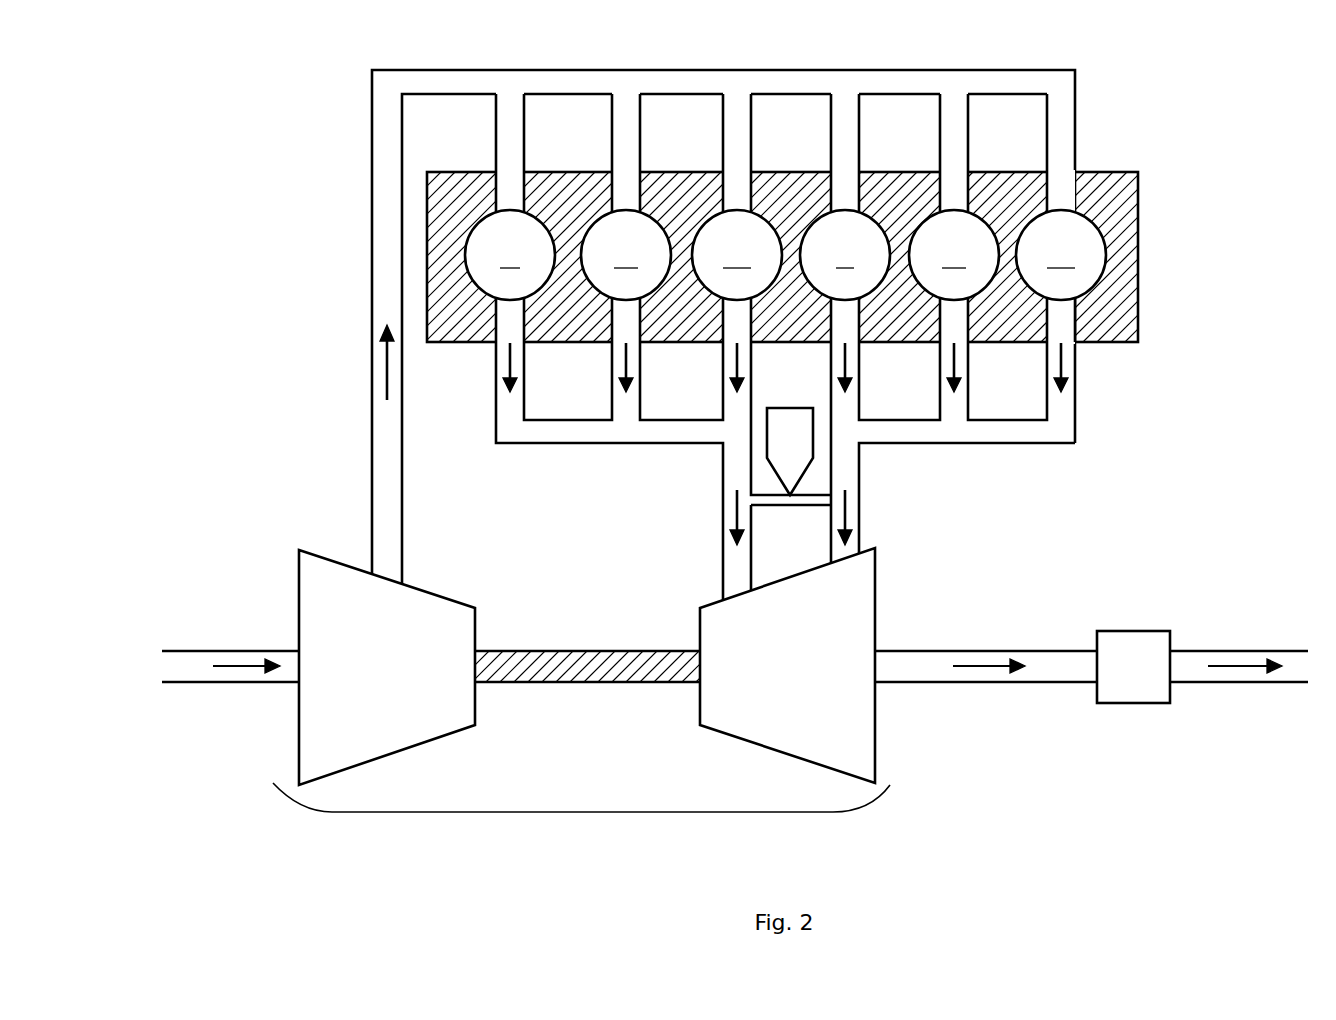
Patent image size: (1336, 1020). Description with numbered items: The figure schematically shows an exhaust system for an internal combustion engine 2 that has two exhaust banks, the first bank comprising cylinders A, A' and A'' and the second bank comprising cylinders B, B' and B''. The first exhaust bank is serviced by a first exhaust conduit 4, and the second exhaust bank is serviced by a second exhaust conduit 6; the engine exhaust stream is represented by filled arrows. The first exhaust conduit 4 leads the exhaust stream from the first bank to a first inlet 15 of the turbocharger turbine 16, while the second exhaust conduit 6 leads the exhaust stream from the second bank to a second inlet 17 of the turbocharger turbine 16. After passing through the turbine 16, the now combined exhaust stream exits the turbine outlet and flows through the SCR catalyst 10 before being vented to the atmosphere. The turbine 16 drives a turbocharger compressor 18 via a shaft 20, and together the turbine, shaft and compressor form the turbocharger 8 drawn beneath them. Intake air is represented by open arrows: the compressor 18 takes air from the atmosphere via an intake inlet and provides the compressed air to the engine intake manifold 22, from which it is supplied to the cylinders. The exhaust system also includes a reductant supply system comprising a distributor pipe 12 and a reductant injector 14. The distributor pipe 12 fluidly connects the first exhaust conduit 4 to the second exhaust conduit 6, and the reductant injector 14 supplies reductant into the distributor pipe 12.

The internal combustion engine 2 is at (776, 320).
The first exhaust conduit 4 is at (557, 435).
The second exhaust conduit 6 is at (952, 421).
The turbocharger 8 is at (582, 812).
The SCR catalyst 10 is at (1120, 679).
The distributor pipe 12 is at (772, 498).
The reductant injector 14 is at (778, 467).
The first inlet 15 is at (731, 595).
The turbocharger turbine 16 is at (774, 680).
The second inlet 17 is at (843, 560).
The turbocharger compressor 18 is at (375, 679).
The shaft 20 is at (575, 680).
The engine intake manifold 22 is at (570, 78).